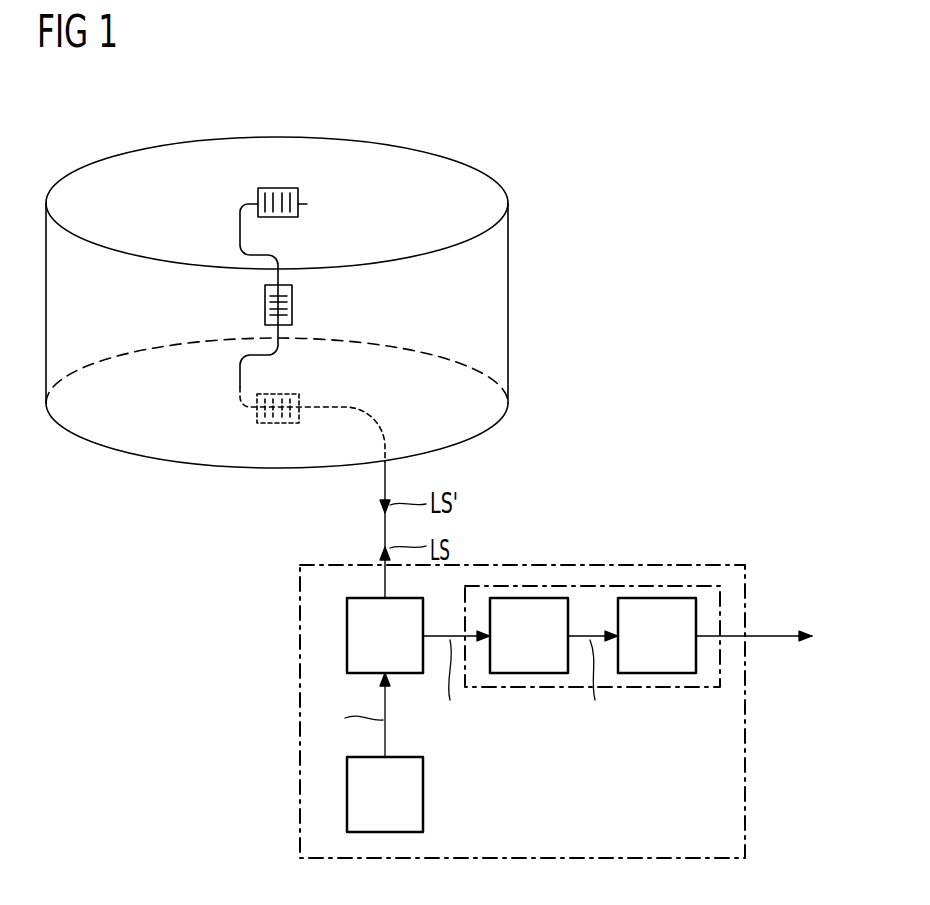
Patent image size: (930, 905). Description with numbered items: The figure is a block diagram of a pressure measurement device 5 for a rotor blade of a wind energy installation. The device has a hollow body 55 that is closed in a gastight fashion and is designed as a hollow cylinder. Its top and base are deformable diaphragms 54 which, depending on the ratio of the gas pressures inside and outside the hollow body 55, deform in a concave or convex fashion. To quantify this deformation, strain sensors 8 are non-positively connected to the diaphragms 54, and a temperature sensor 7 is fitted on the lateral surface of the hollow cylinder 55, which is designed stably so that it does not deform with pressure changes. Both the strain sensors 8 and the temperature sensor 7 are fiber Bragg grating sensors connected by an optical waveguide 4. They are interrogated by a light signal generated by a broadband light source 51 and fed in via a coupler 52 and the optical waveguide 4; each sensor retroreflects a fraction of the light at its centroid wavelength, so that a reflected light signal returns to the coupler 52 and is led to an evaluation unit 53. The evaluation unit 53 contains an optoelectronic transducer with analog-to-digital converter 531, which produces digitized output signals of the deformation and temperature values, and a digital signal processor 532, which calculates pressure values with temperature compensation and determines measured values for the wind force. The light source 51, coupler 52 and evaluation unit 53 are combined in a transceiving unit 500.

The optical waveguide 4 is at (240, 225).
The pressure measurement device 5 is at (566, 259).
The temperature sensor 7 is at (292, 312).
The strain sensor 8 is at (271, 188).
The light source 51 is at (410, 795).
The coupler 52 is at (358, 640).
The evaluation unit 53 is at (697, 690).
The deformable diaphragm 54 is at (418, 172).
The hollow body 55 is at (509, 298).
The transceiving unit 500 is at (300, 795).
The optoelectronic transducer and analog-to-digital converter 531 is at (538, 607).
The digital signal processor 532 is at (673, 607).